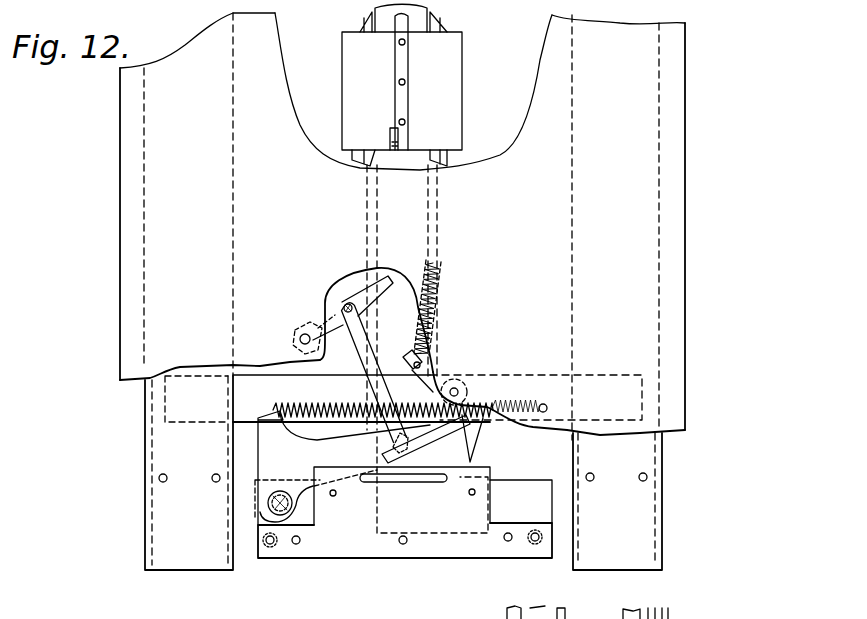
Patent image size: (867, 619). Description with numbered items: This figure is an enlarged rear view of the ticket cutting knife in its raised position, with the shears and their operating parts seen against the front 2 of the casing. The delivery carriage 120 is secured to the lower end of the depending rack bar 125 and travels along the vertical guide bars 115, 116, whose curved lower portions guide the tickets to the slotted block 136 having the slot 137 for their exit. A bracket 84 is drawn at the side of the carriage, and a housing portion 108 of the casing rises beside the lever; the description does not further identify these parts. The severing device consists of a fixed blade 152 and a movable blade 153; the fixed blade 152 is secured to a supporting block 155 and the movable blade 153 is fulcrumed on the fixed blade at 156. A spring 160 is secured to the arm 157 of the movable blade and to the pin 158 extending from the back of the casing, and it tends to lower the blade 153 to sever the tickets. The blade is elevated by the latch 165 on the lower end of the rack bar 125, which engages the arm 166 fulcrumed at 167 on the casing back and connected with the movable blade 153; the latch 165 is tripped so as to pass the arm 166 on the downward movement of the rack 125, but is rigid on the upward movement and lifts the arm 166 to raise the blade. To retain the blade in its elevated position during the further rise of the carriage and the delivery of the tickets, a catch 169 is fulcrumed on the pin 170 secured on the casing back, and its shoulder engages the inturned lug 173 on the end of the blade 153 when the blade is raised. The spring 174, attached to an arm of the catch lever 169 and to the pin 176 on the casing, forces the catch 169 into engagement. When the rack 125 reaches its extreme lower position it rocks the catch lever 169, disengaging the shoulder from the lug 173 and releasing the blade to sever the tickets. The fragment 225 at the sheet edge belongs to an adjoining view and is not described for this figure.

The front 2 is at (660, 165).
The delivery carriage 120 is at (447, 90).
The rack bar 125 is at (410, 62).
The latch 165 is at (392, 130).
The guide bar 115 is at (392, 157).
The right bracket 84 is at (447, 160).
The housing bump 108 is at (333, 321).
The fulcrum 167 is at (303, 332).
The arm 166 is at (360, 300).
The pin 176 is at (440, 262).
The spring 174 is at (428, 337).
The guide bar 116 is at (433, 366).
The pin 170 is at (460, 388).
The spring 160 is at (330, 408).
The pin 158 is at (548, 408).
The arm 157 is at (270, 408).
The movable blade 153 is at (378, 440).
The catch 169 is at (480, 455).
The inturned lug 173 is at (481, 431).
The fulcrum 156 is at (268, 497).
The slot 137 is at (380, 480).
The fixed blade 152 is at (521, 501).
The supporting block 155 is at (353, 545).
The slotted block 136 is at (472, 515).
The adjacent figure fragment 225 is at (688, 617).